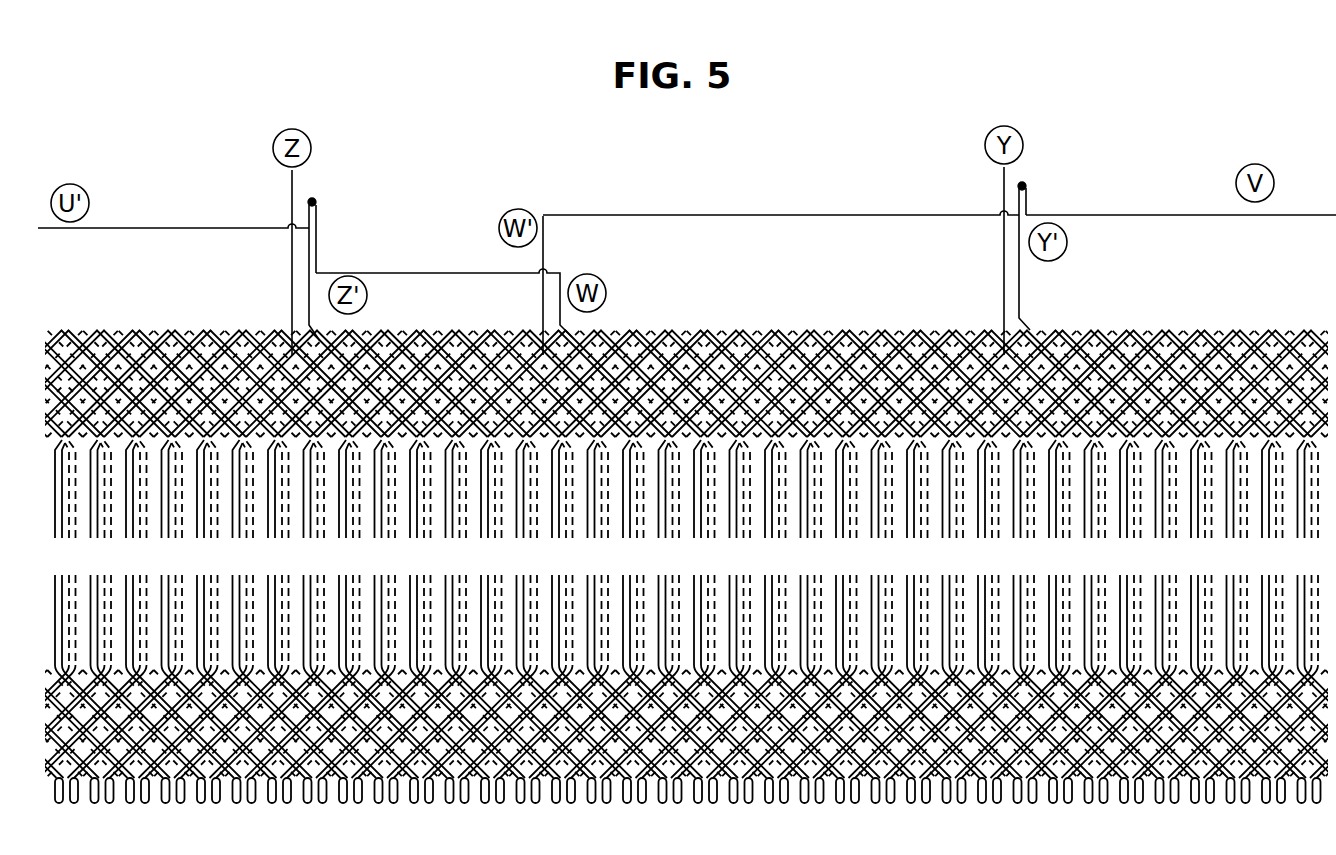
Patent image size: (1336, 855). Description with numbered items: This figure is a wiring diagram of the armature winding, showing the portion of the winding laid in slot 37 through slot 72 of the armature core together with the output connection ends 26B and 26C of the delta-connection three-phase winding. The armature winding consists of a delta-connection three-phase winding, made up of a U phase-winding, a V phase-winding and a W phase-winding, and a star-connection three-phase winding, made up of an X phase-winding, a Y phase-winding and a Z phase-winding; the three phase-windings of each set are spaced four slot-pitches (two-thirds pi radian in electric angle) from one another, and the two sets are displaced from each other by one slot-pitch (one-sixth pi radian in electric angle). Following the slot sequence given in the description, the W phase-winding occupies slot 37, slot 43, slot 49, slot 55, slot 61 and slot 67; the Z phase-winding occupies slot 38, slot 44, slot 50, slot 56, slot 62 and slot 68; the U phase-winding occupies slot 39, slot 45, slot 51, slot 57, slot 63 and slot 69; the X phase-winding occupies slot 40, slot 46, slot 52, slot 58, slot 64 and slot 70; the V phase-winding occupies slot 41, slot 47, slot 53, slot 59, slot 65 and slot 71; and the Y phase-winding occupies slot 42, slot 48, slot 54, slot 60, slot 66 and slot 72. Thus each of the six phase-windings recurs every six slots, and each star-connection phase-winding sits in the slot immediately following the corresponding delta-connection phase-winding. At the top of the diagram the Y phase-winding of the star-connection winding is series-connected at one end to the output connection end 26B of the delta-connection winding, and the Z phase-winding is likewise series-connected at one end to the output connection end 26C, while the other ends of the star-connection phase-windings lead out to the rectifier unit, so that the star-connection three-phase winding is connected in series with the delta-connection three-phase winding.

The output connection end 26B is at (1024, 184).
The output connection end 26C is at (314, 200).
The slot 37 is at (1309, 621).
The slot 38 is at (1273, 621).
The slot 39 is at (1238, 621).
The slot 40 is at (1202, 621).
The slot 41 is at (1167, 621).
The slot 42 is at (1131, 621).
The slot 43 is at (1096, 621).
The slot 44 is at (1060, 621).
The slot 45 is at (1025, 621).
The slot 46 is at (989, 621).
The slot 47 is at (954, 621).
The slot 48 is at (918, 621).
The slot 49 is at (883, 621).
The slot 50 is at (847, 621).
The slot 51 is at (812, 621).
The slot 52 is at (776, 621).
The slot 53 is at (741, 621).
The slot 54 is at (705, 621).
The slot 55 is at (670, 621).
The slot 56 is at (634, 621).
The slot 57 is at (599, 621).
The slot 58 is at (563, 621).
The slot 59 is at (528, 621).
The slot 60 is at (492, 621).
The slot 61 is at (457, 621).
The slot 62 is at (421, 621).
The slot 63 is at (386, 621).
The slot 64 is at (350, 621).
The slot 65 is at (315, 621).
The slot 66 is at (279, 621).
The slot 67 is at (244, 621).
The slot 68 is at (208, 621).
The slot 69 is at (173, 621).
The slot 70 is at (137, 621).
The slot 71 is at (102, 621).
The slot 72 is at (66, 621).